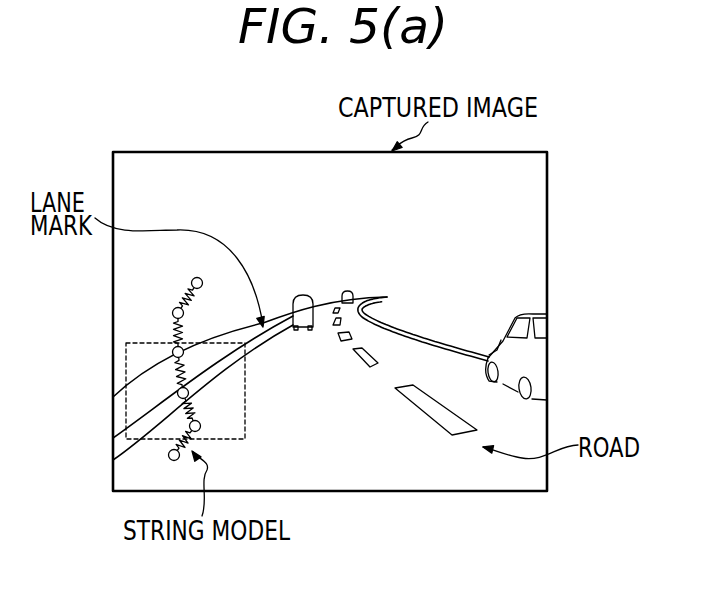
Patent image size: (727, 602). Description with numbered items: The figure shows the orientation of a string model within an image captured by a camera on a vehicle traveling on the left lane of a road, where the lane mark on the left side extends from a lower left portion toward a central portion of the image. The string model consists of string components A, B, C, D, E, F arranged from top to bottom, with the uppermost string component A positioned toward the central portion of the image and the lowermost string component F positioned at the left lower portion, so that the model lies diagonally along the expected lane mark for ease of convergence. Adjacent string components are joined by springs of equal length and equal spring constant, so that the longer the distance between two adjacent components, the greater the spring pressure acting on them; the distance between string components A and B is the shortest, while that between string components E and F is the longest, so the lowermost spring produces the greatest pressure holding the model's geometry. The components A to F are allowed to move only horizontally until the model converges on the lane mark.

The uppermost string component A is at (190, 279).
The string component B is at (171, 309).
The string component C is at (171, 352).
The string component D is at (176, 392).
The string component E is at (188, 427).
The lowermost string component F is at (167, 455).